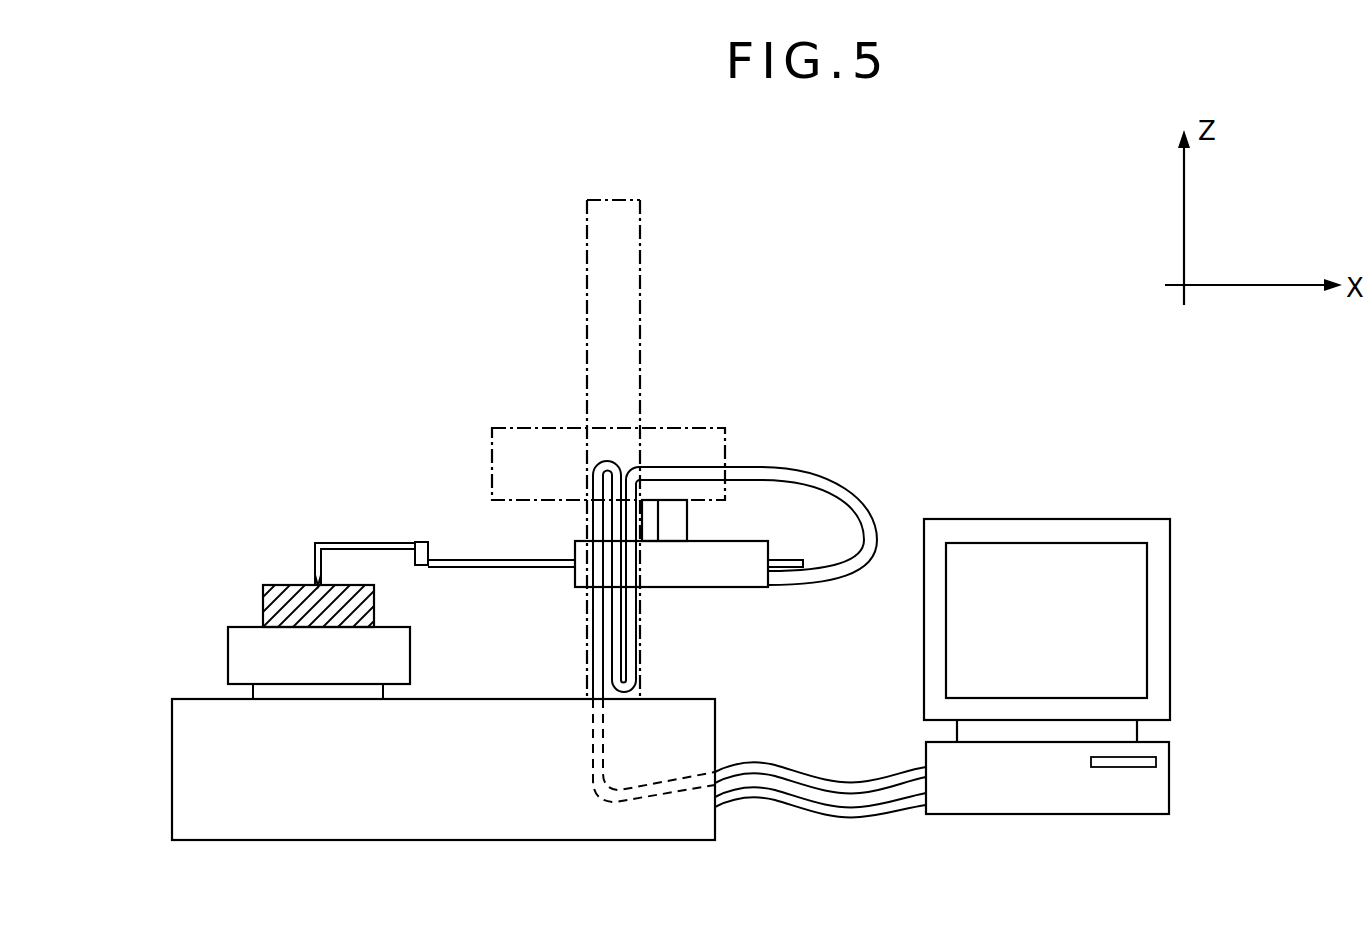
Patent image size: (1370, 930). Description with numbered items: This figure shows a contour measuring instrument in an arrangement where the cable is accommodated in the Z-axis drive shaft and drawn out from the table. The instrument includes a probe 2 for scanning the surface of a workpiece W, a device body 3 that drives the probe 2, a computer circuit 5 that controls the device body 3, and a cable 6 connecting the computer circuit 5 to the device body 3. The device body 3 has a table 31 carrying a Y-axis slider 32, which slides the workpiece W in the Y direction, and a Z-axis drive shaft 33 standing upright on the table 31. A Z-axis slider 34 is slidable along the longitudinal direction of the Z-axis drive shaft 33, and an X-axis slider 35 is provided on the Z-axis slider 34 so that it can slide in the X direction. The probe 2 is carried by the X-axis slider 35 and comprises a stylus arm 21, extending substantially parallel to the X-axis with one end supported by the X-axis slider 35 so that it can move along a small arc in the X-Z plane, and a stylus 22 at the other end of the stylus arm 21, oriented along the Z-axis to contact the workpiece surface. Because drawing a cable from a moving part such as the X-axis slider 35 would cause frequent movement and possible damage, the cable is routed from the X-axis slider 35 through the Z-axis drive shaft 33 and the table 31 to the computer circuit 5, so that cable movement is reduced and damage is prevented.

The probe 2 is at (405, 504).
The device body 3 is at (832, 264).
The computer circuit 5 is at (1143, 788).
The cable 6 is at (846, 509).
The stylus arm 21 is at (483, 574).
The stylus 22 is at (313, 560).
The table 31 is at (453, 812).
The Y-axis slider 32 is at (411, 655).
The Z-axis drive shaft 33 is at (622, 240).
The Z-axis slider 34 is at (677, 444).
The X-axis slider 35 is at (734, 588).
The workpiece W is at (268, 598).